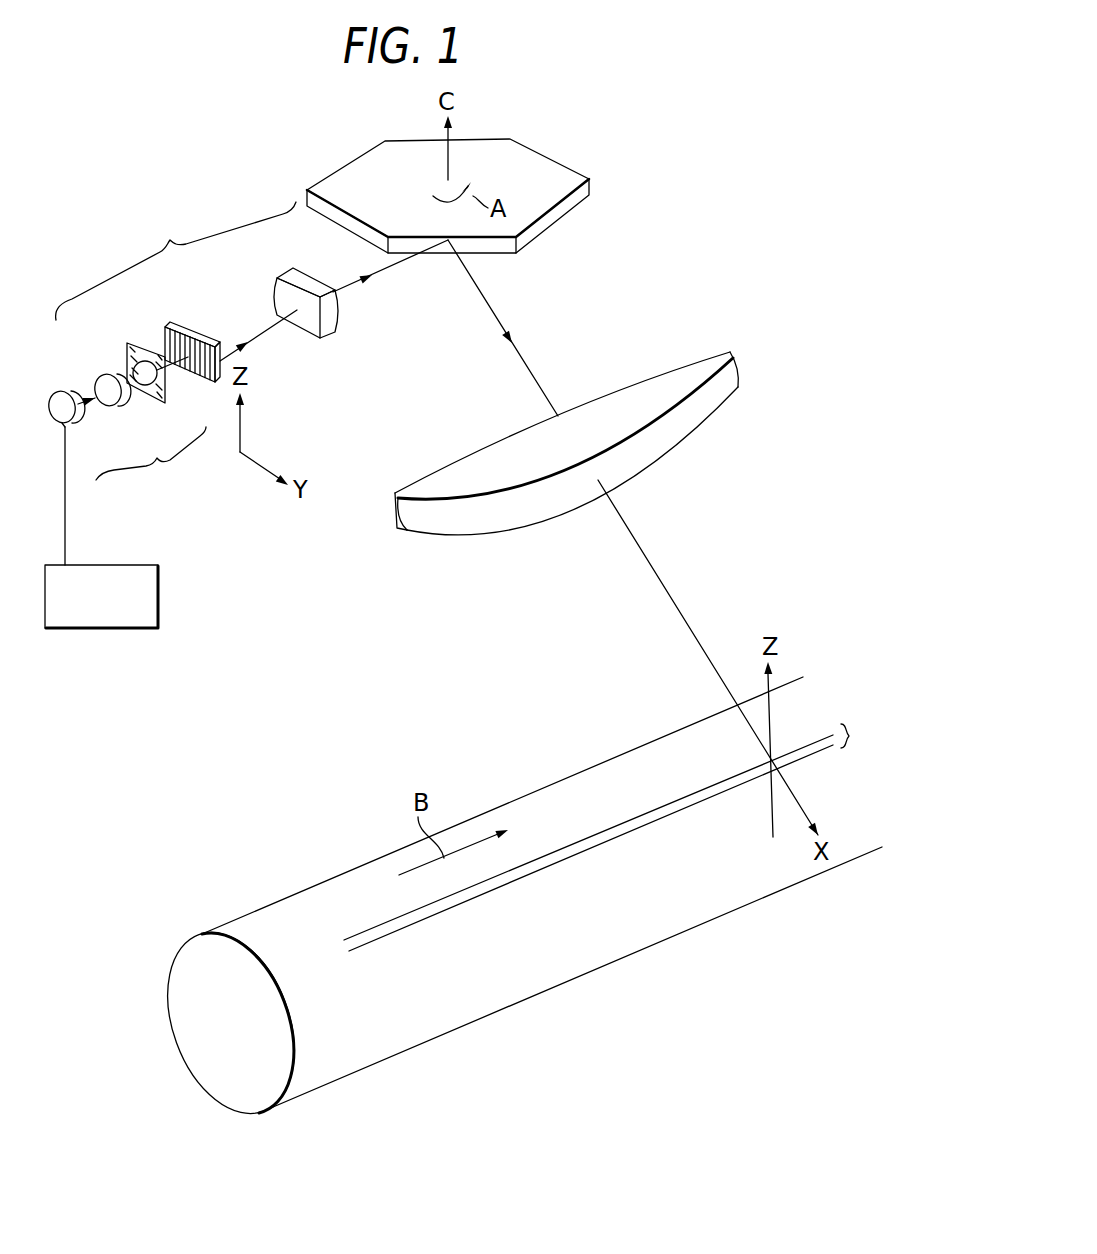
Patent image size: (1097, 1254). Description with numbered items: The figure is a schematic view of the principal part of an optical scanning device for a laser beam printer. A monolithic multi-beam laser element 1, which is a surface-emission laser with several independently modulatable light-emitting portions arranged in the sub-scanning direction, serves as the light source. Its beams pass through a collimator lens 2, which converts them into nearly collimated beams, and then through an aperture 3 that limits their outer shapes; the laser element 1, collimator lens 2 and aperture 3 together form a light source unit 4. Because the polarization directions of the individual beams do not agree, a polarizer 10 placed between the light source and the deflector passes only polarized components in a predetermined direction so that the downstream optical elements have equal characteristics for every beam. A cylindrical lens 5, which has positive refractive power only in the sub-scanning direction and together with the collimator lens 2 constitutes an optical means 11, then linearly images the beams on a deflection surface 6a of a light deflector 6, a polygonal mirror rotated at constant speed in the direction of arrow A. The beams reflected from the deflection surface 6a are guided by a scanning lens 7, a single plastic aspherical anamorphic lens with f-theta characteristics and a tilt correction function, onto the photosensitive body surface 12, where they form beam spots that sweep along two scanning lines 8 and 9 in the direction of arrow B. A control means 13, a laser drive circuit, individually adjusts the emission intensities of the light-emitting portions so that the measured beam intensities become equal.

The monolithic multi-beam laser element 1 is at (70, 423).
The collimator lens 2 is at (112, 402).
The aperture 3 is at (160, 398).
The light source unit 4 is at (151, 465).
The cylindrical lens 5 is at (283, 290).
The light deflector 6 is at (522, 150).
The deflection surface 6a is at (503, 247).
The scanning lens 7 is at (700, 373).
The scanning line 8 is at (360, 947).
The scanning line 9 is at (352, 936).
The polarizer 10 is at (165, 326).
The optical means 11 is at (176, 261).
The photosensitive body surface 12 is at (862, 730).
The control means 13 is at (160, 577).